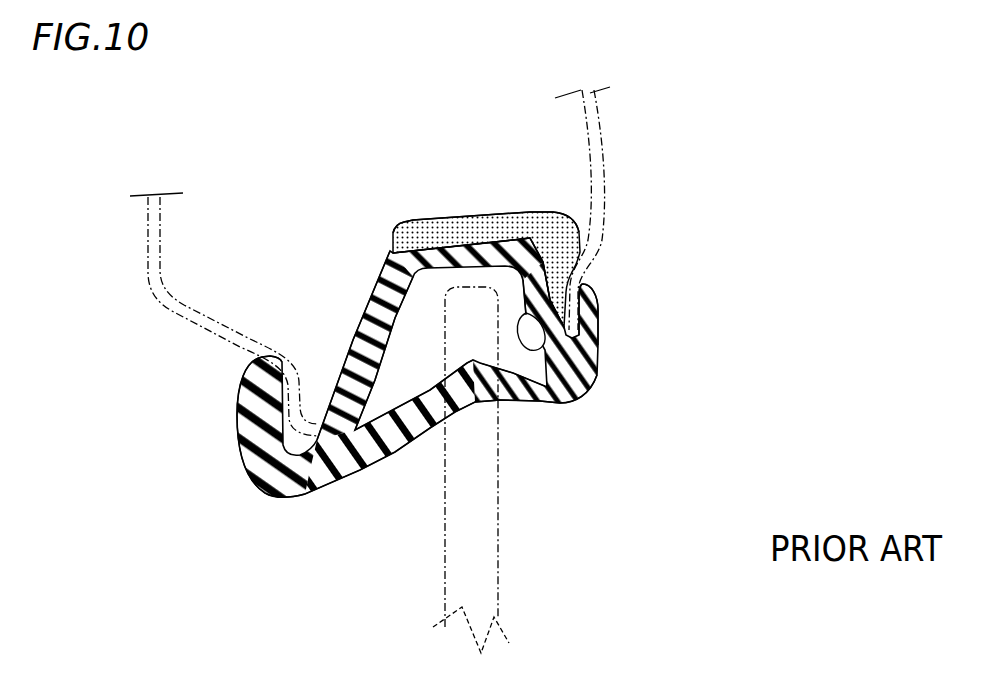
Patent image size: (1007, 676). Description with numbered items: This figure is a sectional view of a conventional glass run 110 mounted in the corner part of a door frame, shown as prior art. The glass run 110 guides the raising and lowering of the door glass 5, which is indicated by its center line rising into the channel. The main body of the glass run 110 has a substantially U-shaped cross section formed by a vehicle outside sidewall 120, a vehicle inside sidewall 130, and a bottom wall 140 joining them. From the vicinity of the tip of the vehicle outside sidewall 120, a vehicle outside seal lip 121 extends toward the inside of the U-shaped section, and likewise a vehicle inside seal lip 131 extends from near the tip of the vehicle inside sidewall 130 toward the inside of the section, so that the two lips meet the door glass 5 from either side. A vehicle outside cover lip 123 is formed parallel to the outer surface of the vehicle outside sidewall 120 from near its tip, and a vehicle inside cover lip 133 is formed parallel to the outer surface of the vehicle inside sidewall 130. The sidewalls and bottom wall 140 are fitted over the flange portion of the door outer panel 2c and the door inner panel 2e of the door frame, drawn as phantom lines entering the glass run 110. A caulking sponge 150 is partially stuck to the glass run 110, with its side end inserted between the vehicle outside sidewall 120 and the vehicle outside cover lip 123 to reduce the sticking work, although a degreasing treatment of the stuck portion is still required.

The glass run 110 is at (253, 493).
The vehicle outside sidewall 120 is at (590, 377).
The vehicle outside seal lip 121 is at (520, 400).
The vehicle outside cover lip 123 is at (597, 325).
The vehicle inside sidewall 130 is at (357, 340).
The vehicle inside seal lip 131 is at (413, 443).
The vehicle inside cover lip 133 is at (237, 425).
The bottom wall 140 is at (437, 220).
The caulking sponge 150 is at (487, 220).
The door outer panel 2c is at (606, 158).
The door inner panel 2e is at (150, 272).
The door glass 5 is at (473, 558).